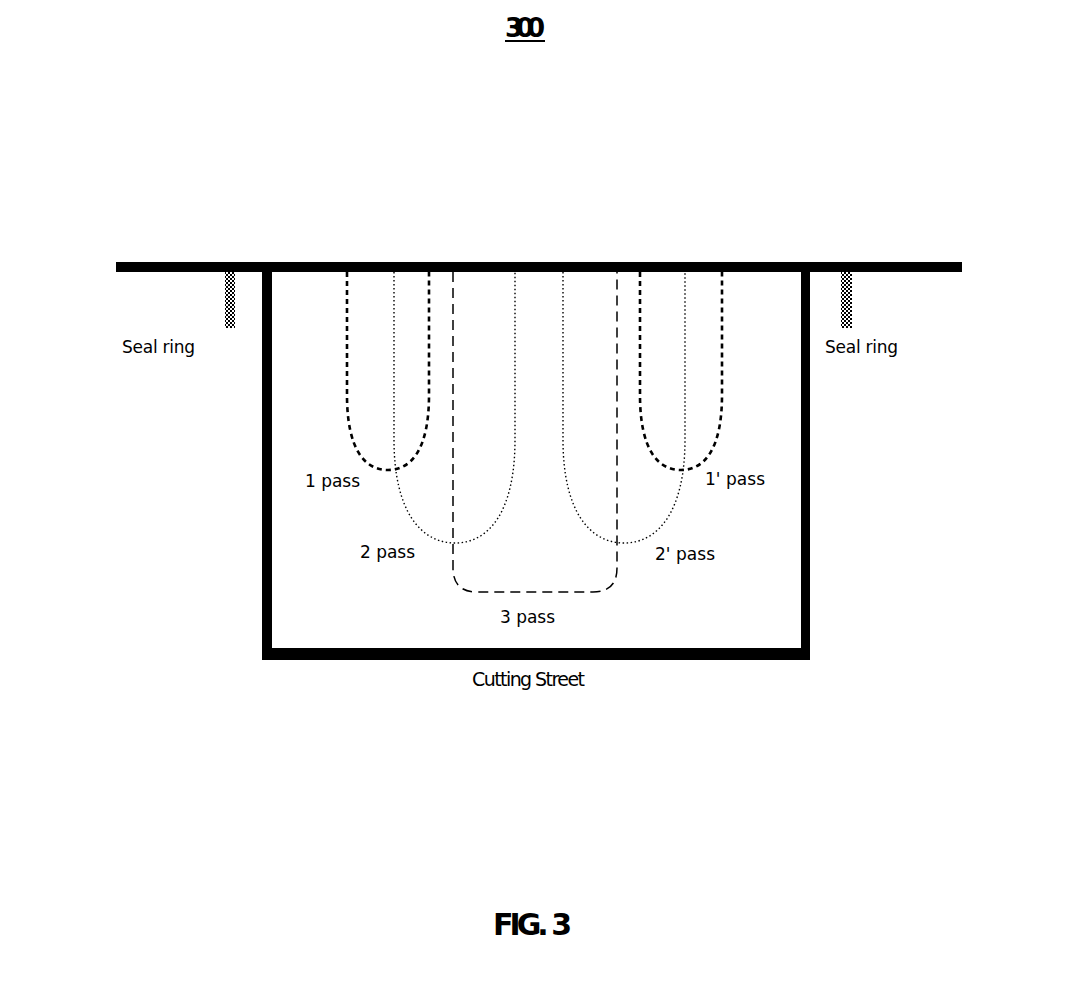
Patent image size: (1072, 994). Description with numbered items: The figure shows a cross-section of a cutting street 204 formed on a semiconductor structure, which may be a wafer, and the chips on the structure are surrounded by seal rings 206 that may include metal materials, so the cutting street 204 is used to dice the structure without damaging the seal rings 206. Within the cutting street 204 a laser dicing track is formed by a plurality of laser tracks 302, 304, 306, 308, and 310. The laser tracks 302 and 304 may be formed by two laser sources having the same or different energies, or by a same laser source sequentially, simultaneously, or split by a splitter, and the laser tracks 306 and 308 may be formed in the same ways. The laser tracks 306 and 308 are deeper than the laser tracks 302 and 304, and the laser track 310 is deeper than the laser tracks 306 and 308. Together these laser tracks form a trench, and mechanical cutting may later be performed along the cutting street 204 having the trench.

The cutting street 204 is at (621, 476).
The seal rings 206 is at (575, 218).
The laser track 302 is at (295, 387).
The laser track 304 is at (781, 376).
The laser track 306 is at (338, 407).
The laser track 308 is at (742, 407).
The laser track 310 is at (396, 454).